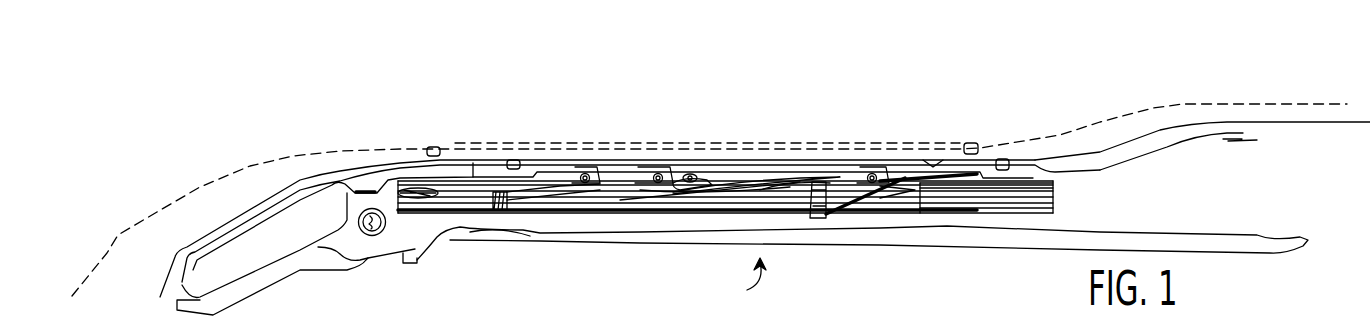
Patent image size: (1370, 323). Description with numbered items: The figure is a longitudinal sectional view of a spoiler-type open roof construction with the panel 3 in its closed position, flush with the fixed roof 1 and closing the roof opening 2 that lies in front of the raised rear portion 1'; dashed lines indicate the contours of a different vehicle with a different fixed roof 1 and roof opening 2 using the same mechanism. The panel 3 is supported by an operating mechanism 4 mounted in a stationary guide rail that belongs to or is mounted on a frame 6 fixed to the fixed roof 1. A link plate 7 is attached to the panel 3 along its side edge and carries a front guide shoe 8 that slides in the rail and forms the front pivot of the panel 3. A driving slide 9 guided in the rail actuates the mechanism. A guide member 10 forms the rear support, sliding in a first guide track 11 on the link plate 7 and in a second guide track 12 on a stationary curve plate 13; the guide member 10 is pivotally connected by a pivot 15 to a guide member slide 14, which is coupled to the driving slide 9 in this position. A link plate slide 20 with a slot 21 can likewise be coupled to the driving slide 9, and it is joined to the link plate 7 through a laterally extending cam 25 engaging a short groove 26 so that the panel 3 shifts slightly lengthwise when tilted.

The fixed roof 1 is at (630, 191).
The raised rear portion 1' is at (1202, 122).
The roof opening 2 is at (1006, 162).
The panel 3 is at (870, 147).
The operating mechanism 4 is at (747, 279).
The frame 6 is at (417, 260).
The link plate 7 is at (738, 172).
The front guide shoe 8 is at (420, 190).
The driving slide 9 is at (523, 203).
The guide member 10 is at (815, 188).
The first guide track 11 is at (790, 187).
The second guide track 12 is at (850, 203).
The curve plate 13 is at (965, 203).
The guide member slide 14 is at (700, 184).
The pivot 15 is at (690, 176).
The link plate slide 20 is at (463, 207).
The slot 21 is at (457, 190).
The cam 25 is at (493, 200).
The short groove 26 is at (500, 210).